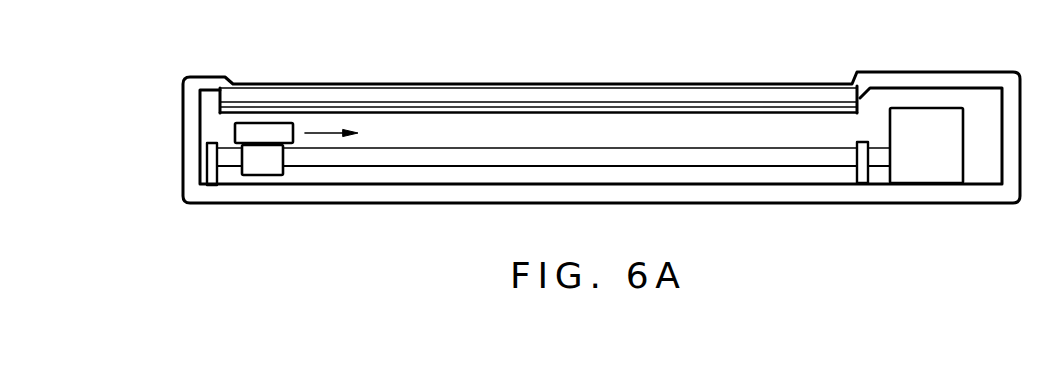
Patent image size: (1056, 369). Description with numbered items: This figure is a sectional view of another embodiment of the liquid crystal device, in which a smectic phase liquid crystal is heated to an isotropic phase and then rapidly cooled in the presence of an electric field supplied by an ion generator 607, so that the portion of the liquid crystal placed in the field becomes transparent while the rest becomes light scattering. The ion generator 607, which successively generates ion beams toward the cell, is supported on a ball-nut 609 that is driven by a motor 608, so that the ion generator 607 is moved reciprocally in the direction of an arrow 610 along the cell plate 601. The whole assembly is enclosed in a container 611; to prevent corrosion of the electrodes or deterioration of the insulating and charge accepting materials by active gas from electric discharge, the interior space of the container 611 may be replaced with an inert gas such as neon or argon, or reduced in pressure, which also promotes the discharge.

The plate (original glass platen) 601 is at (470, 85).
The ion generator 607 is at (265, 133).
The motor 608 is at (922, 123).
The ball-nut 609 is at (257, 168).
The arrow 610 is at (330, 133).
The container 611 is at (183, 120).